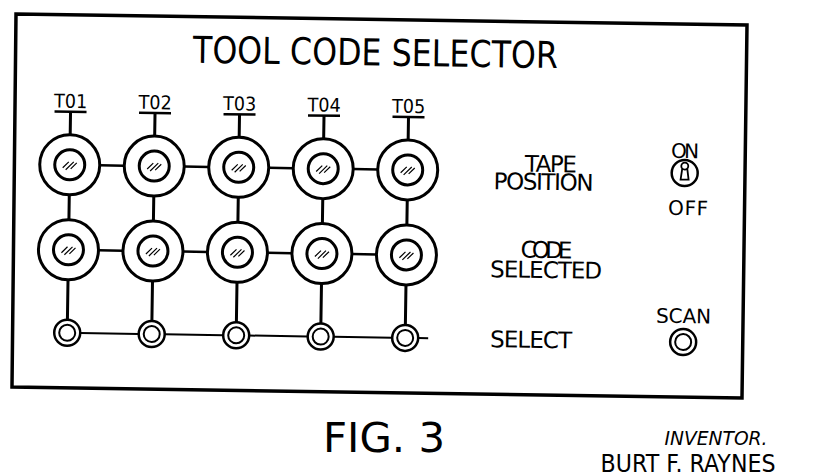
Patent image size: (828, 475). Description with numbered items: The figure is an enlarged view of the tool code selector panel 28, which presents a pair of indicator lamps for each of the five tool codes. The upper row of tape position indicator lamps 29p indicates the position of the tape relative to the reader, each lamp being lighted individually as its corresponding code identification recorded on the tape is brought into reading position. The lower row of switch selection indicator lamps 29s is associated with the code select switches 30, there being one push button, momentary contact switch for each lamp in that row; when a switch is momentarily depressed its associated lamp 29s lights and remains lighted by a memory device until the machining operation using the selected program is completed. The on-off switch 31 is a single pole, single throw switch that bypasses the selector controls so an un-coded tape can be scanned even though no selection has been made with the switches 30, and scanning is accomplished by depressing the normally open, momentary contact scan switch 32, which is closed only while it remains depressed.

The tool code selector panel 28 is at (743, 224).
The tape position indicator lamps 29p is at (81, 192).
The switch selection indicator lamps 29s is at (81, 277).
The code select switches 30 is at (232, 343).
The on-off switch 31 is at (676, 170).
The scan switch 32 is at (688, 346).